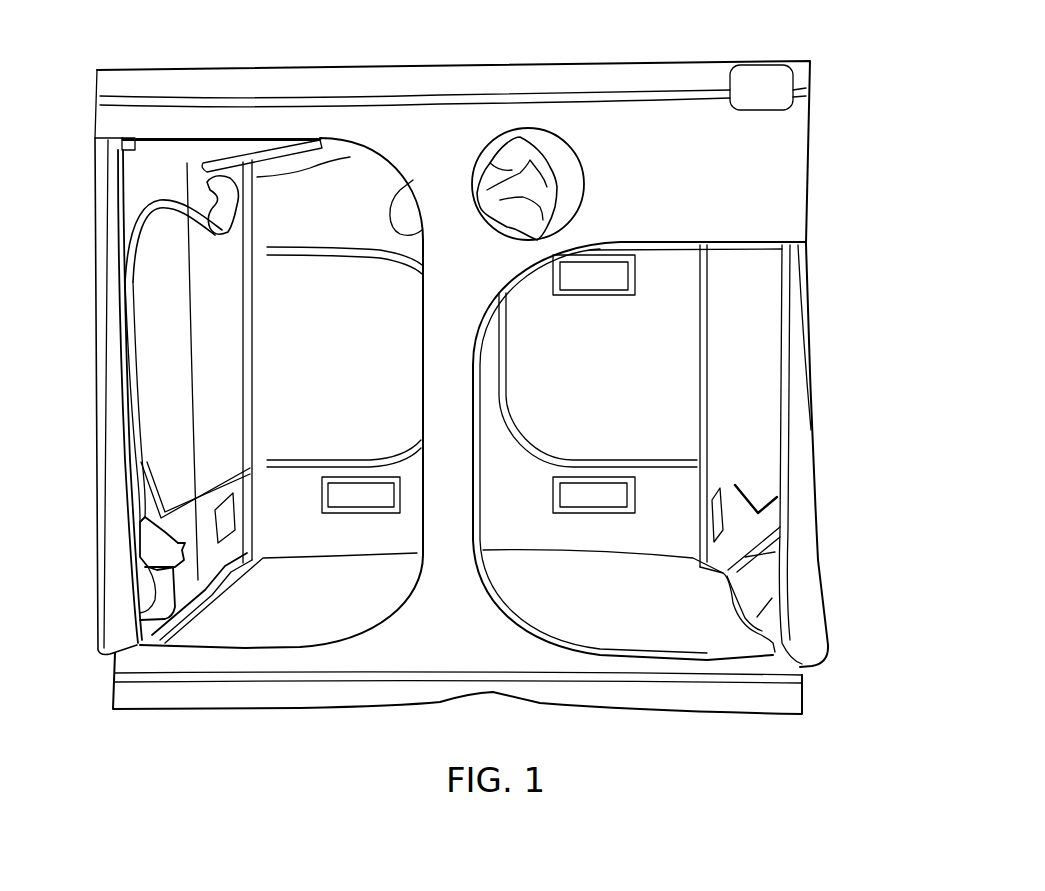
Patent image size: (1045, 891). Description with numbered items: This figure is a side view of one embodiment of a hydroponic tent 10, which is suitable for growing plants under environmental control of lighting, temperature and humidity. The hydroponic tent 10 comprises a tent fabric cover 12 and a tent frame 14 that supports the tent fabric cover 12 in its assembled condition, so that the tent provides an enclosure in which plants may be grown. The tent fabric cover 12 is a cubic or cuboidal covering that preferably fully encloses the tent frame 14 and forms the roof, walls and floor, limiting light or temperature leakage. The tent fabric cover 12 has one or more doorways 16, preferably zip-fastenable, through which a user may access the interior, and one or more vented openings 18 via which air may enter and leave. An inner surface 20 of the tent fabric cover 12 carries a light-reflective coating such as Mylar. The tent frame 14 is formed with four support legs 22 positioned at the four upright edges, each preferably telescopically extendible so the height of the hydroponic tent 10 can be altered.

The hydroponic tent 10 is at (886, 162).
The tent fabric cover 12 is at (108, 676).
The tent frame 14 is at (118, 282).
The doorways 16 is at (98, 508).
The vented openings 18 is at (538, 152).
The inner surface 20 is at (732, 379).
The support legs 22 is at (229, 287).